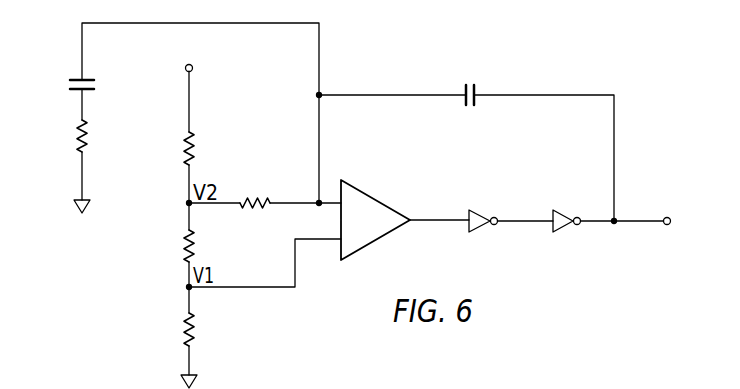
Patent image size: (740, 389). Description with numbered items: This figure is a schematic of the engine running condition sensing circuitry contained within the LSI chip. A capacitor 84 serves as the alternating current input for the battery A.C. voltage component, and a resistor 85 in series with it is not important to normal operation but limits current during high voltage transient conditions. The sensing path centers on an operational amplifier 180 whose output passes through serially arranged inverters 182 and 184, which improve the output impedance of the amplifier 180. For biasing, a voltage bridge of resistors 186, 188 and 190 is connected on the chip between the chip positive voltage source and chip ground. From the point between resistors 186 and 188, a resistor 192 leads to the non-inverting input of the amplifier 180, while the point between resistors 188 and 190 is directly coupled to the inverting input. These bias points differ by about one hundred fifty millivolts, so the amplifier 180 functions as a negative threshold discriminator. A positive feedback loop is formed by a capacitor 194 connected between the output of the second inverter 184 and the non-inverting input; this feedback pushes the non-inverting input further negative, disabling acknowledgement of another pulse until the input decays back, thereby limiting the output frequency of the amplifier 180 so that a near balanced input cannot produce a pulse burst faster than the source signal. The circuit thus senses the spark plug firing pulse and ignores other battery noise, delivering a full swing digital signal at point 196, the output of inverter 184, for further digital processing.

The capacitor 84 is at (78, 78).
The resistor 85 is at (78, 139).
The operational amplifier 180 is at (378, 200).
The inverter 182 is at (480, 210).
The inverter 184 is at (562, 226).
The resistor 186 is at (196, 140).
The resistor 188 is at (196, 247).
The resistor 190 is at (183, 329).
The resistor 192 is at (247, 199).
The capacitor 194 is at (480, 86).
The point 196 is at (670, 214).